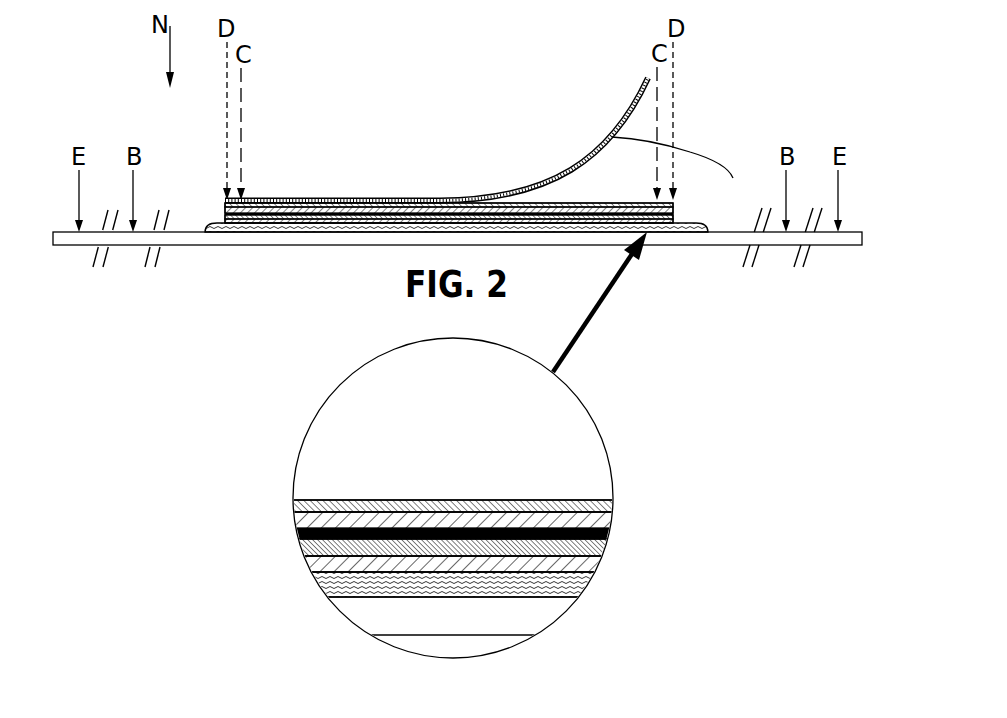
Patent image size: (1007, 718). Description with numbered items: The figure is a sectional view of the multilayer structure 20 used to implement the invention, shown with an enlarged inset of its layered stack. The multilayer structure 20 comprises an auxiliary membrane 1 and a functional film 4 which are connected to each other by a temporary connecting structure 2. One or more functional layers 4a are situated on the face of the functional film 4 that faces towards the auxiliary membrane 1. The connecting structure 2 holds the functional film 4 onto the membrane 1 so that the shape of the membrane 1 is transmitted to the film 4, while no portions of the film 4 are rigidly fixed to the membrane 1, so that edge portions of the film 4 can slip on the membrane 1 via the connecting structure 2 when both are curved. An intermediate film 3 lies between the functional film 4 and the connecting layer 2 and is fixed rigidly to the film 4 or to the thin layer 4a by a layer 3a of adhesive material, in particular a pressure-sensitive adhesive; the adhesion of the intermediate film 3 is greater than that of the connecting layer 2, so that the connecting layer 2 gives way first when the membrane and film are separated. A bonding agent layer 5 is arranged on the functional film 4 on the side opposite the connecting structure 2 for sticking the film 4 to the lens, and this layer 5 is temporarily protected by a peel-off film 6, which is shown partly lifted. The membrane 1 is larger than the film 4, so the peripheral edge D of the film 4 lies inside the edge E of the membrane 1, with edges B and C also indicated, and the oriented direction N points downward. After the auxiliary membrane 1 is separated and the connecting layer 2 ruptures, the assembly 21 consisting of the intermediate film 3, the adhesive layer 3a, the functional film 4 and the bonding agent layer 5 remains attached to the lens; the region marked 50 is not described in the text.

The auxiliary membrane 1 is at (732, 236).
The connecting structure 2 is at (213, 227).
The intermediate film 3 is at (668, 214).
The adhesive material layer 3a is at (673, 219).
The functional film 4 is at (609, 211).
The thin layer 4a is at (625, 214).
The bonding agent layer 5 is at (596, 205).
The peel-off film 6 is at (637, 94).
The multilayer structure 20 is at (434, 108).
The assembly 21 is at (672, 151).
The peeling position 50 is at (567, 192).